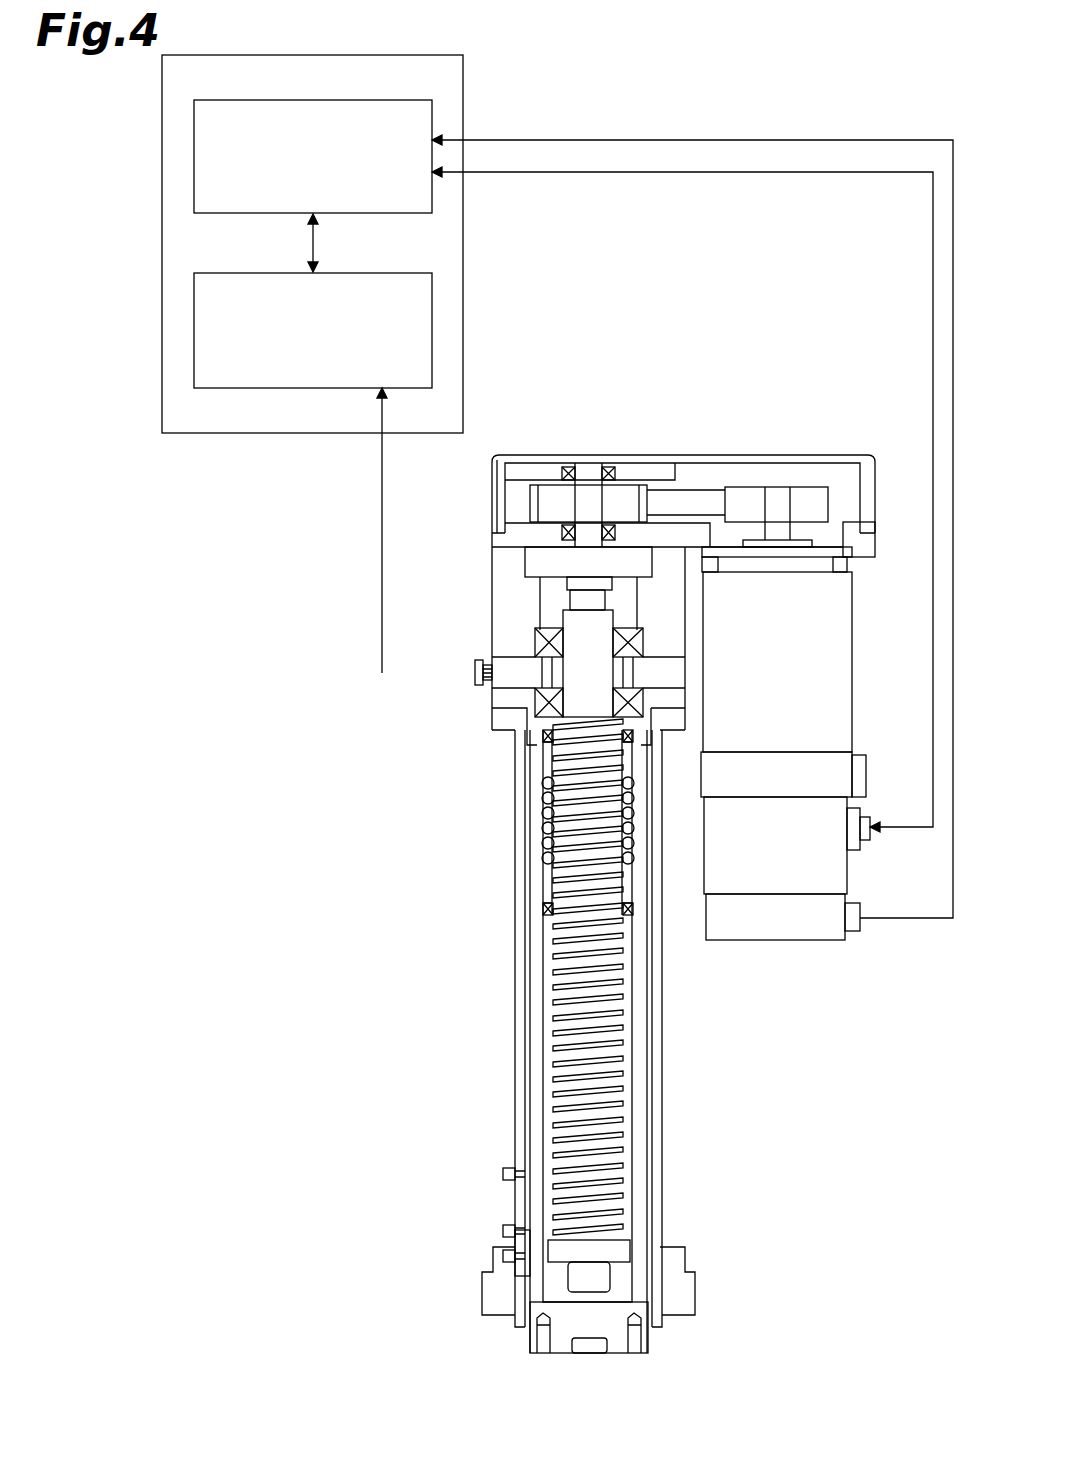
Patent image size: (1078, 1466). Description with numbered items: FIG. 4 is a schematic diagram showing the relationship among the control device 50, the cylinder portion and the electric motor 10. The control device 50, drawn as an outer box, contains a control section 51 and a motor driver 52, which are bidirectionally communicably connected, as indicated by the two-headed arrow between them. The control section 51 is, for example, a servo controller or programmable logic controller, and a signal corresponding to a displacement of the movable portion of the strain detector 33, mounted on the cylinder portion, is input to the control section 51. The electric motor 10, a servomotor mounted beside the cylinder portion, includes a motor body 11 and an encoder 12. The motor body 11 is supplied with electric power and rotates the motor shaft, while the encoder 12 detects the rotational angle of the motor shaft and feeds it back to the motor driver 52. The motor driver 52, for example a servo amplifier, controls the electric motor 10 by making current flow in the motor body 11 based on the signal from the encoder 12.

The electric motor 10 is at (852, 668).
The motor body 11 is at (745, 865).
The encoder 12 is at (795, 925).
The strain detector 33 is at (505, 680).
The control device 50 is at (162, 122).
The control section 51 is at (233, 388).
The motor driver 52 is at (194, 195).